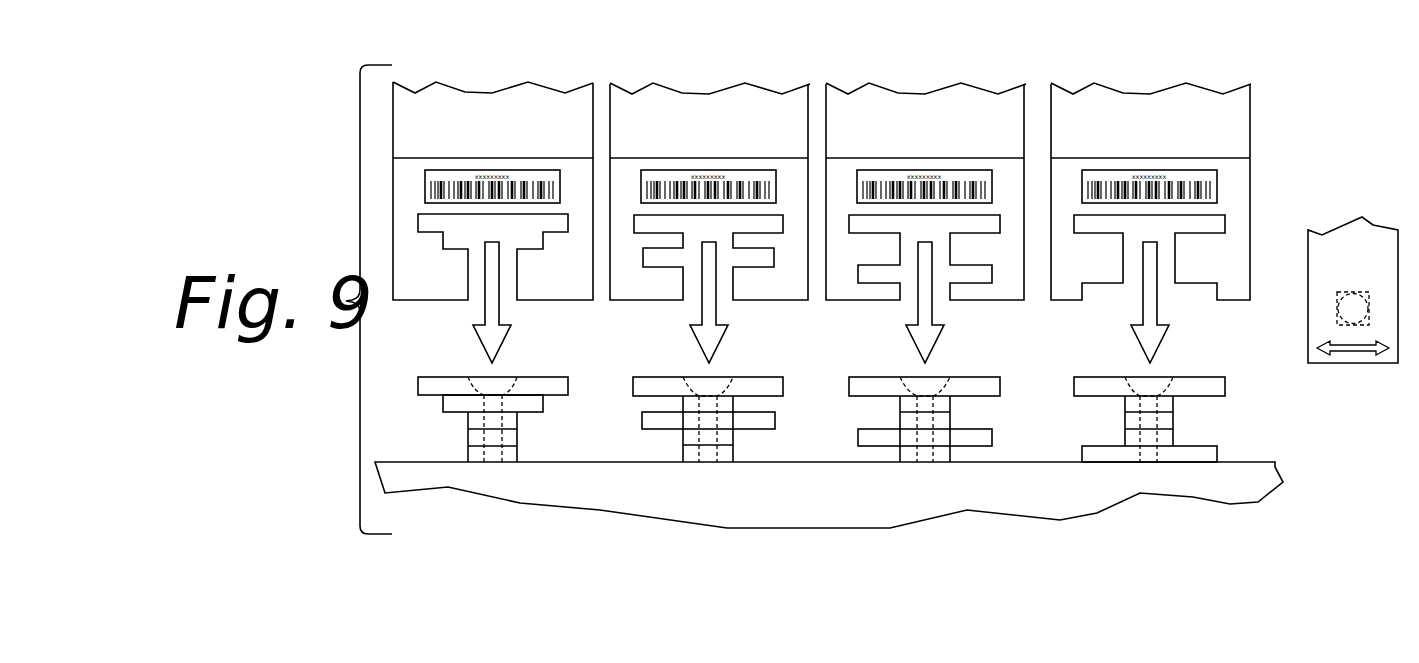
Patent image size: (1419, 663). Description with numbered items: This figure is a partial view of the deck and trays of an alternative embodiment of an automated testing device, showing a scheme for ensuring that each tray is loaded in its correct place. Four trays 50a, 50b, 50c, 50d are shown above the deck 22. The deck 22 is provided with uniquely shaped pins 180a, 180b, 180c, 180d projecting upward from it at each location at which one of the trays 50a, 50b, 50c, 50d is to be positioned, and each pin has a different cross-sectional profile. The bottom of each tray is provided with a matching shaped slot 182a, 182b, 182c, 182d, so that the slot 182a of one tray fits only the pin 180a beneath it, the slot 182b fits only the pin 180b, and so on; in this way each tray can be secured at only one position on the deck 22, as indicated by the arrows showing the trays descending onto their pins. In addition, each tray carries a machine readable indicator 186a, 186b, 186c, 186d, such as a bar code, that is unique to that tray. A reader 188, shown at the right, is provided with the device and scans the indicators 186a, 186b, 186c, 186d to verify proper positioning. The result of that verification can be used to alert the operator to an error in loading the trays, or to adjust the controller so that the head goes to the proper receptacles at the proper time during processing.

The tray 50a is at (1183, 102).
The tray 50b is at (960, 102).
The tray 50c is at (755, 102).
The tray 50d is at (535, 102).
The machine readable indicator 186a is at (1095, 176).
The machine readable indicator 186b is at (873, 176).
The machine readable indicator 186c is at (668, 176).
The machine readable indicator 186d is at (447, 176).
The slot 182a is at (1131, 296).
The slot 182b is at (906, 296).
The slot 182c is at (690, 296).
The slot 182d is at (474, 296).
The pin 180a is at (1094, 464).
The pin 180b is at (876, 449).
The pin 180c is at (669, 432).
The pin 180d is at (440, 413).
The deck 22 is at (582, 462).
The reader 188 is at (1373, 243).